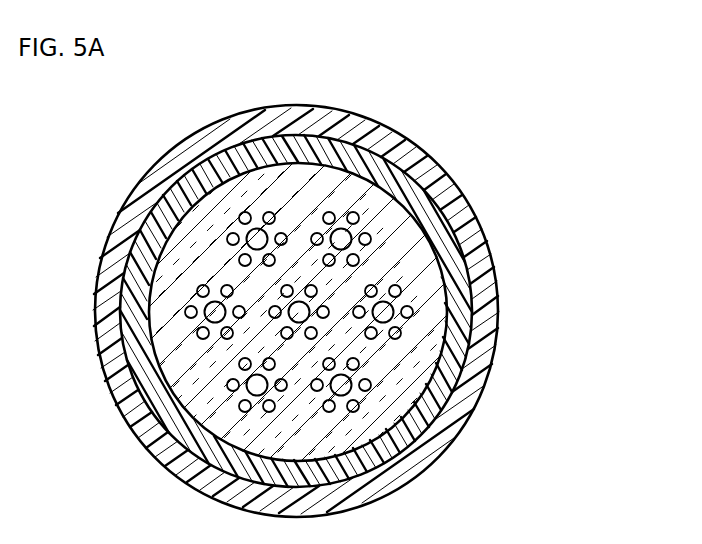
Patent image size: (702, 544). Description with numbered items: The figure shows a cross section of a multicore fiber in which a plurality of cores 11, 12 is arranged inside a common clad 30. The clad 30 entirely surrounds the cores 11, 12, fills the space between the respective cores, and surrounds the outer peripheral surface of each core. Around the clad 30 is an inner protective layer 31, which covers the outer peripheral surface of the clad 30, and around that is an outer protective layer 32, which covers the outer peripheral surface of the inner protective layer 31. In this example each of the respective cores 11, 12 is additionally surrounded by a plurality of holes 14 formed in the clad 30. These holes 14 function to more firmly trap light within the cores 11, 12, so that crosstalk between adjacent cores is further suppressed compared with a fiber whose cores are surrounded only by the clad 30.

The core 11 is at (291, 306).
The core 12 is at (249, 232).
The hole 14 is at (240, 214).
The clad 30 is at (378, 192).
The inner protective layer 31 is at (463, 238).
The outer protective layer 32 is at (445, 185).